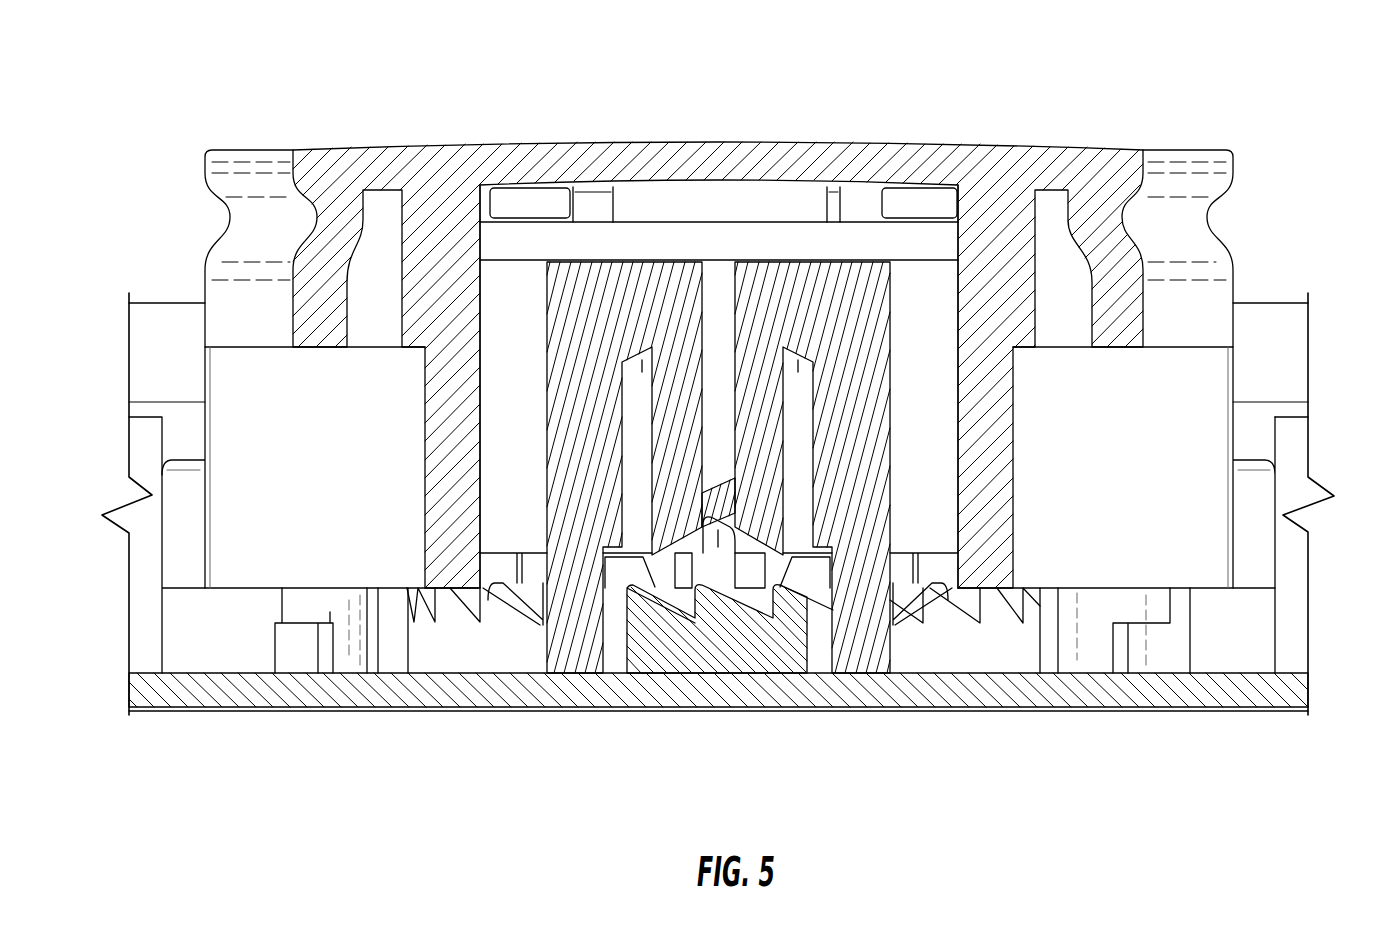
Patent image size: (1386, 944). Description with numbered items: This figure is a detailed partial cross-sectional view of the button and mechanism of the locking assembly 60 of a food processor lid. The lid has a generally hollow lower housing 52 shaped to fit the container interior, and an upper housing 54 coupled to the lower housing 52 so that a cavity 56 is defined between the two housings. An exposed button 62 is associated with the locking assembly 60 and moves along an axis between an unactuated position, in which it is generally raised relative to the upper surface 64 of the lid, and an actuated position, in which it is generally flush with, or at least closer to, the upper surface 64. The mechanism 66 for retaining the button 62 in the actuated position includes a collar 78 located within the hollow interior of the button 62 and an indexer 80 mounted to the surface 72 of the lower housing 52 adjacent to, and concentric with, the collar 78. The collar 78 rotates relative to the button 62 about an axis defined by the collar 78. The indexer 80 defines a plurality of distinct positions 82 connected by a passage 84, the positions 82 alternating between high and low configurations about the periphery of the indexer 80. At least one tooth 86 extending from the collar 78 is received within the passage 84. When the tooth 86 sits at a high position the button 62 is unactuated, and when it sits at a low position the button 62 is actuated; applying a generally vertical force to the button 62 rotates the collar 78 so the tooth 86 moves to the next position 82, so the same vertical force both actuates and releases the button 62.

The lower housing 52 is at (1005, 697).
The upper housing 54 is at (1293, 366).
The cavity 56 is at (1262, 555).
The locking assembly 60 is at (1276, 84).
The button 62 is at (1002, 177).
The upper surface 64 is at (163, 303).
The mechanism 66 is at (479, 192).
The surface 72 is at (227, 672).
The collar 78 is at (625, 250).
The indexer 80 is at (572, 533).
The positions 82 is at (800, 365).
The passage 84 is at (643, 365).
The tooth 86 is at (718, 532).